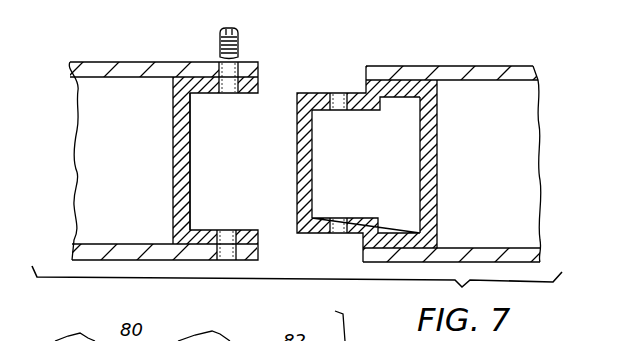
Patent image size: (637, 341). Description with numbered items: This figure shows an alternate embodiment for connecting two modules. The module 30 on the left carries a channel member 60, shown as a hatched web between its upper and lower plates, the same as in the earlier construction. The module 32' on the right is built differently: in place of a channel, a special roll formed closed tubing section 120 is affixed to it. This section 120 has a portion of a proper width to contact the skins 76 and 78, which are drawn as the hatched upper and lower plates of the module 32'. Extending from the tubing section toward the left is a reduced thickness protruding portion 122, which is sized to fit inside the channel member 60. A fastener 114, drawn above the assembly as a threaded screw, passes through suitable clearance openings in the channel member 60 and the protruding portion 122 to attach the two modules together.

The module 30 is at (318, 170).
The module 32' is at (318, 170).
The channel member 60 is at (173, 163).
The skin 76 is at (450, 72).
The skin 78 is at (415, 262).
The fastener 114 is at (240, 42).
The roll formed closed tubing section 120 is at (437, 172).
The reduced thickness protruding portion 122 is at (310, 98).